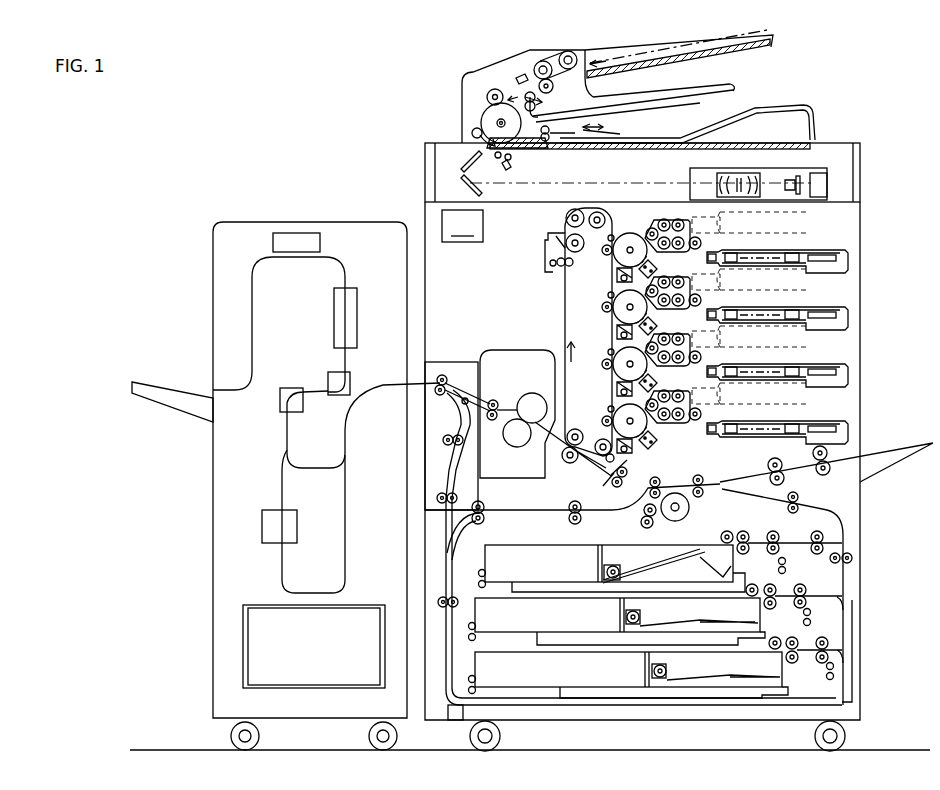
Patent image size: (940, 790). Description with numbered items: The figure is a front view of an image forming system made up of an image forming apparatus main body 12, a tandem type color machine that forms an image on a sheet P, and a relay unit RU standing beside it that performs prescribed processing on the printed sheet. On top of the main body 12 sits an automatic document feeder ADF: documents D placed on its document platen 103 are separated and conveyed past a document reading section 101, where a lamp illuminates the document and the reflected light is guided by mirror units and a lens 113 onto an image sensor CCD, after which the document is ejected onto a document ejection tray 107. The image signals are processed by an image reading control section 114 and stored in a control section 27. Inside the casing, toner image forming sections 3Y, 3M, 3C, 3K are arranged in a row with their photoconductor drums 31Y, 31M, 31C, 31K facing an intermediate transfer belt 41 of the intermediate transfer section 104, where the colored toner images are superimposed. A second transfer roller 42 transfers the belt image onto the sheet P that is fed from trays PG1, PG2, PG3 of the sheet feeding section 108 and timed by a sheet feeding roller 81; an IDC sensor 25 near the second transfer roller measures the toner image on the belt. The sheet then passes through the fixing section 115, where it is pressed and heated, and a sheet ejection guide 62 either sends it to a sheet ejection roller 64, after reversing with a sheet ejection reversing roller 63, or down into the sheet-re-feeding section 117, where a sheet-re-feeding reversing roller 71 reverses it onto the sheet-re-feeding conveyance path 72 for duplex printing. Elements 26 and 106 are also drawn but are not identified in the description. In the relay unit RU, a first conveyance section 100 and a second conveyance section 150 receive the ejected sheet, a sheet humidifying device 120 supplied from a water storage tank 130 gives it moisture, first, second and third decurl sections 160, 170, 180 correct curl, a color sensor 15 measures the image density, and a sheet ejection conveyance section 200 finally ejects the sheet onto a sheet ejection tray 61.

The image forming apparatus main body 12 is at (855, 106).
The color sensor 15 is at (272, 244).
The IDC sensor 25 is at (640, 460).
The fixing device 26 is at (470, 414).
The control section 27 is at (462, 226).
The photoconductor drum 31Y is at (651, 247).
The photoconductor drum 31M is at (610, 310).
The photoconductor drum 31C is at (610, 365).
The photoconductor drum 31K is at (610, 422).
The toner image forming section 3Y is at (730, 223).
The toner image forming section 3M is at (730, 280).
The toner image forming section 3C is at (730, 337).
The toner image forming section 3K is at (730, 394).
The intermediate transfer belt 41 is at (565, 283).
The second transfer roller 42 is at (560, 460).
The sheet ejection tray 61 is at (172, 408).
The sheet ejection guide 62 is at (477, 378).
The sheet ejection reversing roller 63 is at (458, 450).
The sheet ejection roller 64 is at (440, 375).
The sheet-re-feeding reversing roller 71 is at (458, 610).
The sheet-re-feeding conveyance path 72 is at (486, 518).
The sheet feeding roller 81 is at (625, 480).
The first conveyance section 100 is at (372, 425).
The document reading section 101 is at (852, 178).
The document platen 103 is at (727, 58).
The intermediate transfer section 104 is at (565, 310).
The sheet entrance 106 is at (416, 470).
The document ejection tray 107 is at (693, 104).
The sheet feeding section 108 is at (851, 533).
The lens 113 is at (742, 172).
The image reading control section 114 is at (824, 186).
The fixing section 115 is at (493, 347).
The sheet-re-feeding section 117 is at (483, 528).
The sheet humidifying device 120 is at (264, 508).
The water storage tank 130 is at (363, 605).
The second conveyance section 150 is at (317, 475).
The first decurl section 160 is at (297, 388).
The second decurl section 170 is at (364, 372).
The third decurl section 180 is at (351, 287).
The sheet ejection conveyance section 200 is at (265, 268).
The relay unit RU is at (296, 218).
The automatic document feeder ADF is at (852, 82).
The image sensor CCD is at (800, 180).
The document D is at (683, 43).
The sheet P is at (655, 560).
The tray PG1 is at (661, 561).
The tray PG2 is at (656, 614).
The tray PG3 is at (656, 667).